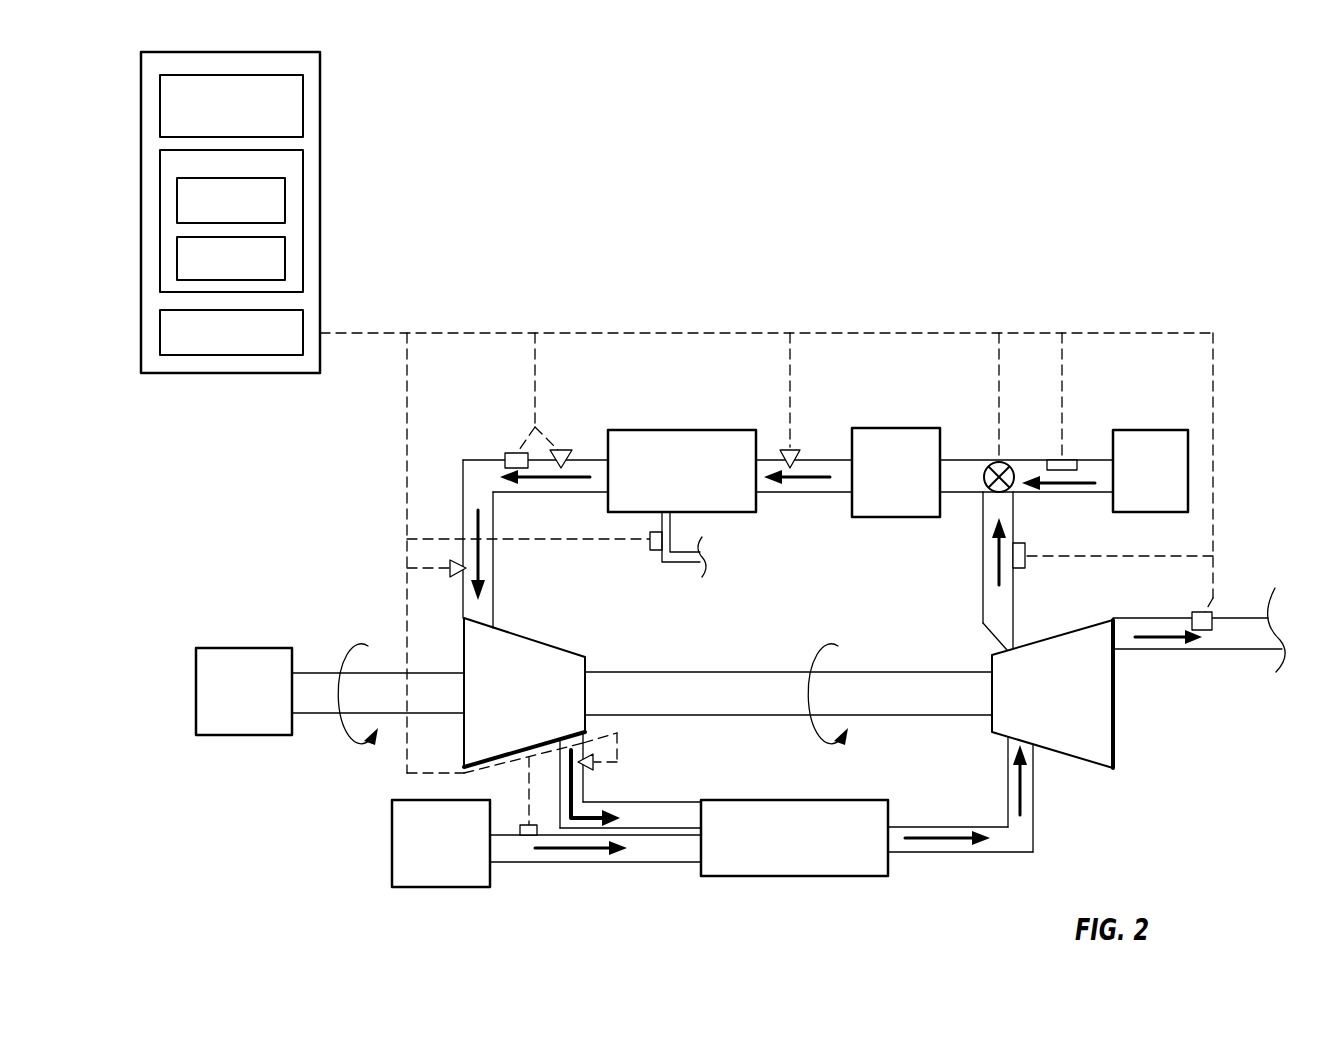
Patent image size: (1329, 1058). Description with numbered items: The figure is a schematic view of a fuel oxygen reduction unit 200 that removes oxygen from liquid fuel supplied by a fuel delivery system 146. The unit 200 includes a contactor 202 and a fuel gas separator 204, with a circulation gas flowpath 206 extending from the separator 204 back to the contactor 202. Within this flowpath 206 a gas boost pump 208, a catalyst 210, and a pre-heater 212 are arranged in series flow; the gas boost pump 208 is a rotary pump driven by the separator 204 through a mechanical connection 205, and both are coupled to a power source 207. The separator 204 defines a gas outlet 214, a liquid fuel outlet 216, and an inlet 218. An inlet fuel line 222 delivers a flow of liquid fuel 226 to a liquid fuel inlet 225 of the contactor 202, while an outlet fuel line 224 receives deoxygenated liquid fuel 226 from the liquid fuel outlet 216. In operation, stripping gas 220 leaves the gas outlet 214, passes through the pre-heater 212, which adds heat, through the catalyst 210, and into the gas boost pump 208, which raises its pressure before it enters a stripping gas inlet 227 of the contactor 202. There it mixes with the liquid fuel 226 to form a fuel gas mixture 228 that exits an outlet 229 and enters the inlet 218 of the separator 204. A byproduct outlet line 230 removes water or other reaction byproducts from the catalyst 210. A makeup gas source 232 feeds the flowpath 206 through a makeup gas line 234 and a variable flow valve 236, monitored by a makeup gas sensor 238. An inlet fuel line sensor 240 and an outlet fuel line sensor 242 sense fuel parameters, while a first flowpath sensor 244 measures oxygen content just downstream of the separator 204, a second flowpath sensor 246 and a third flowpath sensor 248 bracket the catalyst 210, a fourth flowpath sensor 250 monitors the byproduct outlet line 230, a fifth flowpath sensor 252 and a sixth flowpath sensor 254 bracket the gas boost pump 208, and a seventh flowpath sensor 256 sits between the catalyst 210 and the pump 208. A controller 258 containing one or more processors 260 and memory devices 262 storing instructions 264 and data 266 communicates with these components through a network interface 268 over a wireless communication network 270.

The fuel delivery system 146 is at (517, 922).
The fuel oxygen reduction unit 200 is at (994, 255).
The contactor 202 is at (780, 876).
The fuel gas separator 204 is at (1113, 750).
The mechanical connection 205 is at (725, 672).
The circulation gas flowpath 206 is at (825, 462).
The power source 207 is at (262, 711).
The gas boost pump 208 is at (553, 647).
The catalyst 210 is at (708, 432).
The pre-heater 212 is at (898, 517).
The gas outlet 214 is at (1021, 635).
The liquid fuel outlet 216 is at (1123, 628).
The inlet 218 is at (1006, 748).
The stripping gas 220 is at (804, 480).
The inlet fuel line 222 is at (595, 862).
The outlet fuel line 224 is at (1235, 649).
The liquid fuel inlet 225 is at (694, 852).
The liquid fuel 226 is at (1166, 640).
The stripping gas inlet 227 is at (690, 803).
The fuel gas mixture 228 is at (958, 852).
The outlet 229 is at (900, 850).
The byproduct outlet line 230 is at (680, 562).
The makeup gas source 232 is at (1168, 489).
The makeup gas line 234 is at (1097, 458).
The variable flow valve 236 is at (1003, 461).
The makeup gas sensor 238 is at (1069, 460).
The inlet fuel line sensor 240 is at (521, 826).
The outlet fuel line sensor 242 is at (1208, 612).
The first flowpath sensor 244 is at (1025, 553).
The second flowpath sensor 246 is at (800, 400).
The third flowpath sensor 248 is at (563, 448).
The fourth flowpath sensor 250 is at (650, 548).
The fifth flowpath sensor 252 is at (456, 577).
The sixth flowpath sensor 254 is at (600, 770).
The seventh flowpath sensor 256 is at (510, 455).
The controller 258 is at (320, 93).
The processor 260 is at (248, 121).
The memory device 262 is at (303, 178).
The instructions 264 is at (248, 217).
The data 266 is at (248, 274).
The network interface 268 is at (248, 350).
The communication network 270 is at (776, 320).